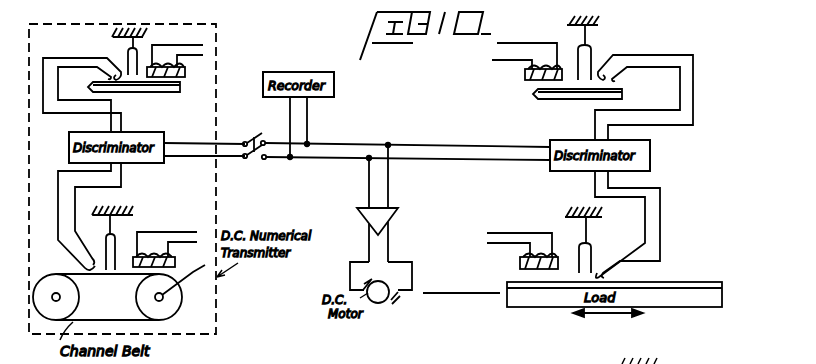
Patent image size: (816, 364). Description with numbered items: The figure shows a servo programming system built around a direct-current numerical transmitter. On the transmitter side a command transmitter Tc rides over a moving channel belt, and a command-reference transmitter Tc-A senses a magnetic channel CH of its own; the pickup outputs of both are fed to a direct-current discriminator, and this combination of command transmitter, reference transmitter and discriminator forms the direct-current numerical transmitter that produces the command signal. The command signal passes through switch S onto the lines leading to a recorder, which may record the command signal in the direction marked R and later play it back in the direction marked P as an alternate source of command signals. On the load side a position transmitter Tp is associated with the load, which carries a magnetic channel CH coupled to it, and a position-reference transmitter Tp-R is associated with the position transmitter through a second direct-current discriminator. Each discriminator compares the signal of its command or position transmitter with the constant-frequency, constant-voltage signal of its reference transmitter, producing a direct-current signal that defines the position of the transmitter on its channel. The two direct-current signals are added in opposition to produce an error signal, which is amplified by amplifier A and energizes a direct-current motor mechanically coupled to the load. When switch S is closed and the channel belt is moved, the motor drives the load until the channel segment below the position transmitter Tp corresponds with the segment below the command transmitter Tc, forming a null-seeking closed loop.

The command-reference transmitter Tc-A is at (114, 51).
The command transmitter Tc is at (103, 247).
The magnetic channel CH is at (180, 86).
The switch S is at (254, 160).
The record signal path R is at (316, 108).
The playback signal path P is at (319, 130).
The amplifier A is at (377, 203).
The position-reference transmitter Tp-R is at (596, 54).
The position transmitter Tp is at (592, 251).